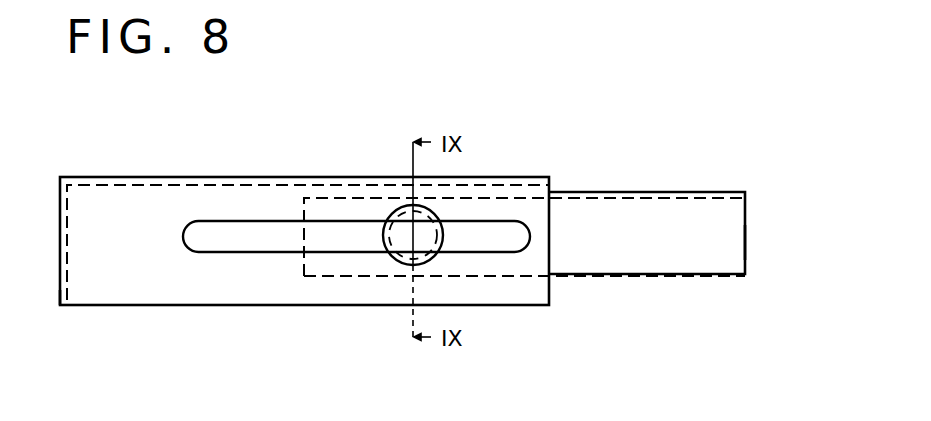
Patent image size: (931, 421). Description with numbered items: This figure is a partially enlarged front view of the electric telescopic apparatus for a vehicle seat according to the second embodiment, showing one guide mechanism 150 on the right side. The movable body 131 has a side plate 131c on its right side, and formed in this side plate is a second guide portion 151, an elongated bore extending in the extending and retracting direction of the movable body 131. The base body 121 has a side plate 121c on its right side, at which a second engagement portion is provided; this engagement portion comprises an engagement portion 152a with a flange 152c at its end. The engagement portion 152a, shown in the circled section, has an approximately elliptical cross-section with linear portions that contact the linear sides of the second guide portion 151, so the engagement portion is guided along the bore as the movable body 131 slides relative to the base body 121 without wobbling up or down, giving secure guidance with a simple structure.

The movable body 131 is at (173, 176).
The side plate 131c is at (115, 297).
The second guide portion 151 is at (270, 252).
The engagement portion 152a is at (383, 245).
The guide mechanism 150 is at (385, 258).
The flange 152c is at (428, 258).
The base body 121 is at (659, 183).
The side plate 121c is at (733, 242).